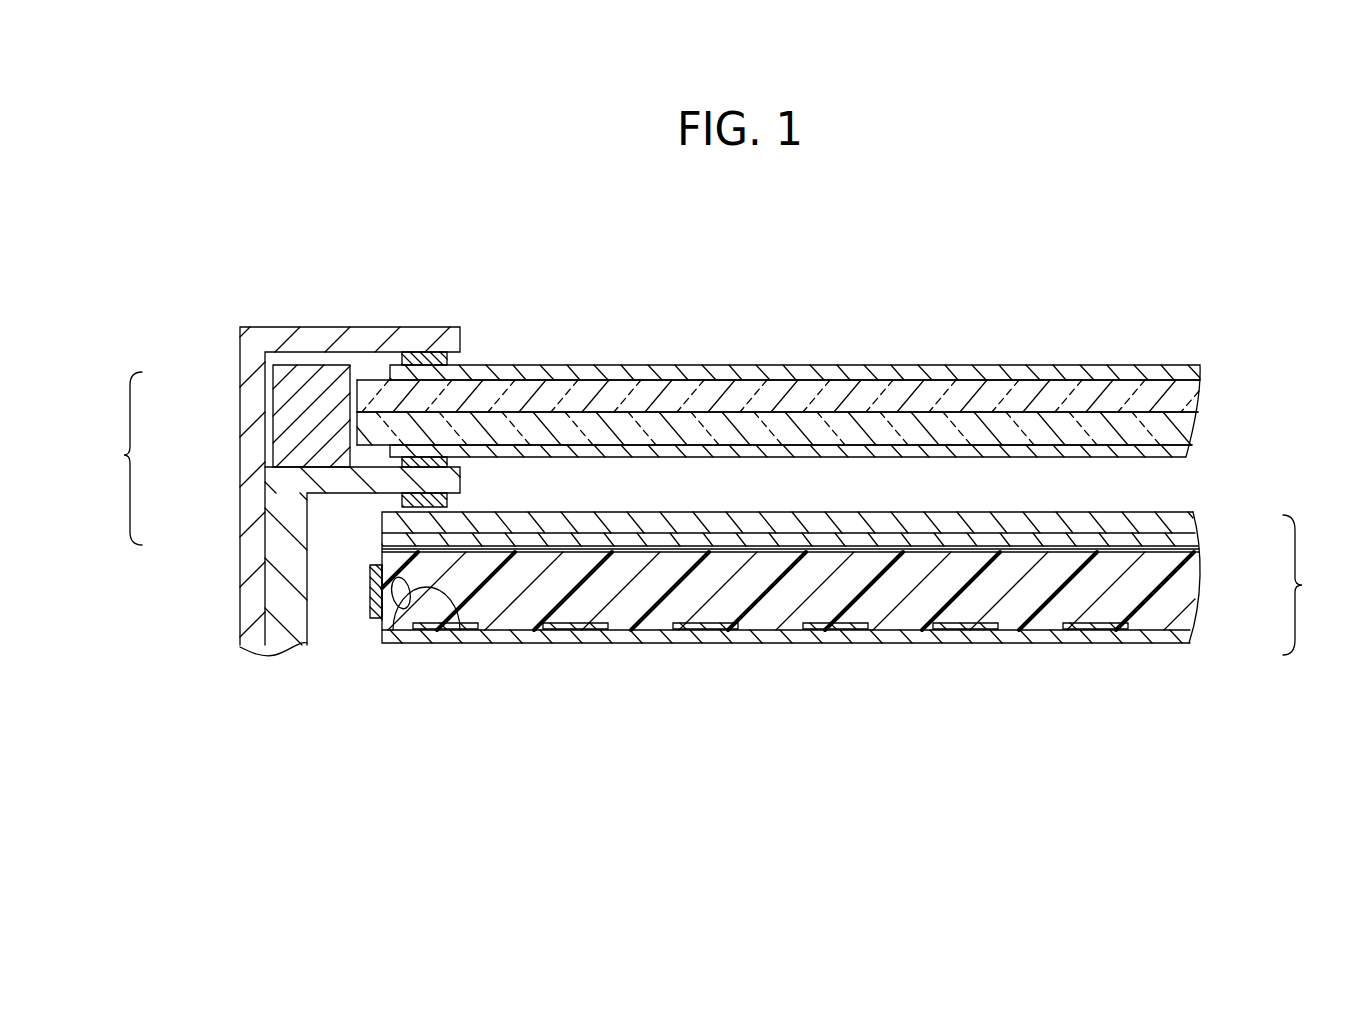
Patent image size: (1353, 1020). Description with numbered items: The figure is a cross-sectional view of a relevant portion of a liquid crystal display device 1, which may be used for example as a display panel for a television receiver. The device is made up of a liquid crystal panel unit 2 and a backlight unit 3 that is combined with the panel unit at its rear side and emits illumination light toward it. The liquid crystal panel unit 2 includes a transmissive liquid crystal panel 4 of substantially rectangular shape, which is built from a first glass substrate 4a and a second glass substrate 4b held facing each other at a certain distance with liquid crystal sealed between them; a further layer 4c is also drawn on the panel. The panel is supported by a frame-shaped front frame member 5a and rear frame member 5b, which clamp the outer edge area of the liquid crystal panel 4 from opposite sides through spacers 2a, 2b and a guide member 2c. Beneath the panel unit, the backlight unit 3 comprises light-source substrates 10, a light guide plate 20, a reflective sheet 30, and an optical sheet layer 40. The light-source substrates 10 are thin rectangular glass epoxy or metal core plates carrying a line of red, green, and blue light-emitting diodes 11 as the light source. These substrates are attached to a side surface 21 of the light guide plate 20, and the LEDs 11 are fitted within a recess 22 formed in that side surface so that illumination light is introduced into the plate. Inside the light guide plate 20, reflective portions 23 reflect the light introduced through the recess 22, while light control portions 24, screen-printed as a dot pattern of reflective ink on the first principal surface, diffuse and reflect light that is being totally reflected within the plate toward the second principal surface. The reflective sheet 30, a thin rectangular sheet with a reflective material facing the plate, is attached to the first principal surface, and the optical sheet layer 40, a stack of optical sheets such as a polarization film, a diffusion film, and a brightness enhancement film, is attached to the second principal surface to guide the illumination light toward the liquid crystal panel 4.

The liquid crystal display device 1 is at (822, 229).
The liquid crystal panel unit 2 is at (116, 467).
The spacer 2a is at (410, 358).
The spacer 2b is at (447, 462).
The guide member 2c is at (312, 380).
The backlight unit 3 is at (1322, 606).
The liquid crystal panel 4 is at (352, 397).
The first glass substrate 4a is at (1192, 432).
The second glass substrate 4b is at (1205, 393).
The surface film 4c is at (1083, 370).
The front frame member 5a is at (245, 462).
The rear frame member 5b is at (270, 518).
The light-source substrate 10 is at (372, 617).
The light-emitting diode 11 is at (450, 618).
The light guide plate 20 is at (1178, 597).
The side surface 21 is at (378, 578).
The recess 22 is at (401, 612).
The reflective portion 23 is at (382, 553).
The light control portion 24 is at (578, 630).
The reflective sheet 30 is at (1180, 640).
The optical sheet layer 40 is at (1213, 512).